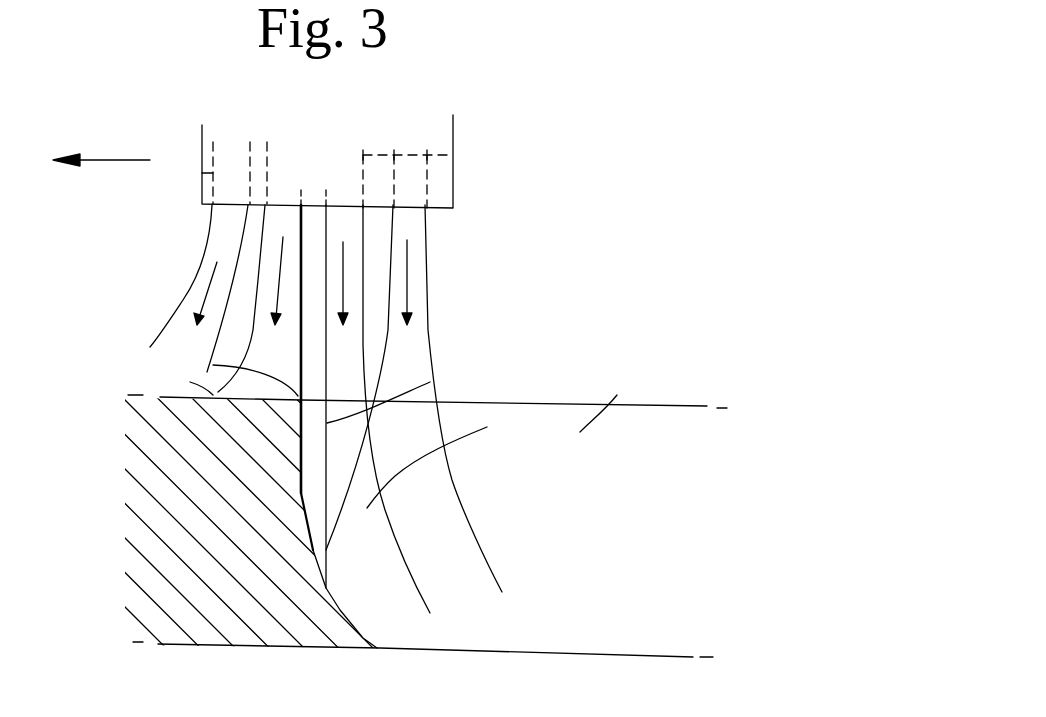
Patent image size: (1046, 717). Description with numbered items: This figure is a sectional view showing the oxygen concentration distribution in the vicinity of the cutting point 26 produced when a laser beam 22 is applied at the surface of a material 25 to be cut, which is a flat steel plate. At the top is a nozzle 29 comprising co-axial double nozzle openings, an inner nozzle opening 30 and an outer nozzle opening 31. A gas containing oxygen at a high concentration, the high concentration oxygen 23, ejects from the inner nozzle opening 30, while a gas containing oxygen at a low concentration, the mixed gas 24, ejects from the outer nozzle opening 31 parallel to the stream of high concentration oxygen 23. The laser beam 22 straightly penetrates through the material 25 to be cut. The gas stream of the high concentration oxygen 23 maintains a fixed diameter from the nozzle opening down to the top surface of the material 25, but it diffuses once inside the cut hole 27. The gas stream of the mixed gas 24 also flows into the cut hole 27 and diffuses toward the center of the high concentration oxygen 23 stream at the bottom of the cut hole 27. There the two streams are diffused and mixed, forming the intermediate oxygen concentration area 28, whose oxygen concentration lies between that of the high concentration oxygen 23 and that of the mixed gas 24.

The laser beam 22 is at (430, 382).
The high concentration oxygen 23 is at (363, 352).
The mixed gas 24 is at (427, 287).
The material to be cut 25 is at (190, 382).
The cutting point 26 is at (213, 365).
The cut hole 27 is at (617, 395).
The intermediate oxygen concentration area 28 is at (487, 427).
The nozzle 29 is at (453, 195).
The inner nozzle opening 30 is at (453, 152).
The outer nozzle opening 31 is at (202, 175).